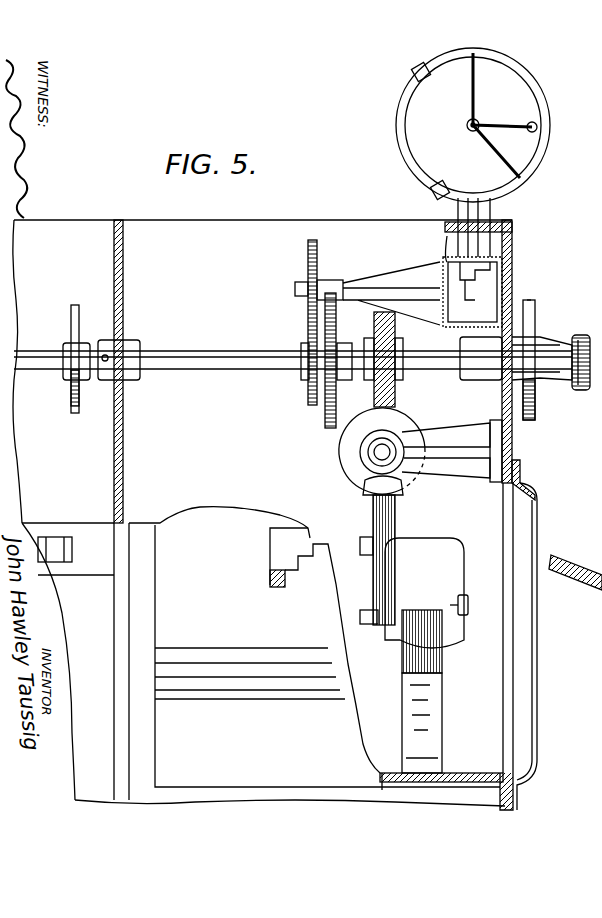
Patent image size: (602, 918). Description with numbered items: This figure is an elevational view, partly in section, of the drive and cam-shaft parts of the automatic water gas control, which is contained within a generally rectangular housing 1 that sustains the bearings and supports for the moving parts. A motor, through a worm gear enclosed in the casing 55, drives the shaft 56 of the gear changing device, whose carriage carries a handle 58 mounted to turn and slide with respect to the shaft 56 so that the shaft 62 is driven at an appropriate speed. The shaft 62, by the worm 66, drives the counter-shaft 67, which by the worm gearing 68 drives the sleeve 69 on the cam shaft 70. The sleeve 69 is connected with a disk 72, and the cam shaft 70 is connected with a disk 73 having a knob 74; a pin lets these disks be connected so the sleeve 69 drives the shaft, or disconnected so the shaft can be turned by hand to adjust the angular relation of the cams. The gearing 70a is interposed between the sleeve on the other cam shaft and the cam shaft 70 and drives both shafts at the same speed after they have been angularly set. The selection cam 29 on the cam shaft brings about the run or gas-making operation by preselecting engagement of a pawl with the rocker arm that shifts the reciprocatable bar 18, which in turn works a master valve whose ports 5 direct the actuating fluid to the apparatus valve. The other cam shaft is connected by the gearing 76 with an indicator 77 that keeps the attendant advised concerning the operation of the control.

The housing 1 is at (97, 220).
The ports 5 is at (582, 560).
The reciprocatable bar 18 is at (60, 537).
The selection cam 29 is at (76, 413).
The casing 55 is at (442, 668).
The shaft 56 is at (468, 608).
The handle 58 is at (270, 577).
The shaft 62 is at (362, 546).
The worm 66 is at (398, 525).
The counter-shaft 67 is at (375, 452).
The worm gearing 68 is at (374, 395).
The sleeve 69 is at (420, 370).
The cam shaft 70 is at (232, 368).
The gearing 70a is at (327, 418).
The disk 72 is at (527, 300).
The disk 73 is at (538, 312).
The knob 74 is at (580, 336).
The gearing 76 is at (470, 280).
The indicator 77 is at (548, 147).